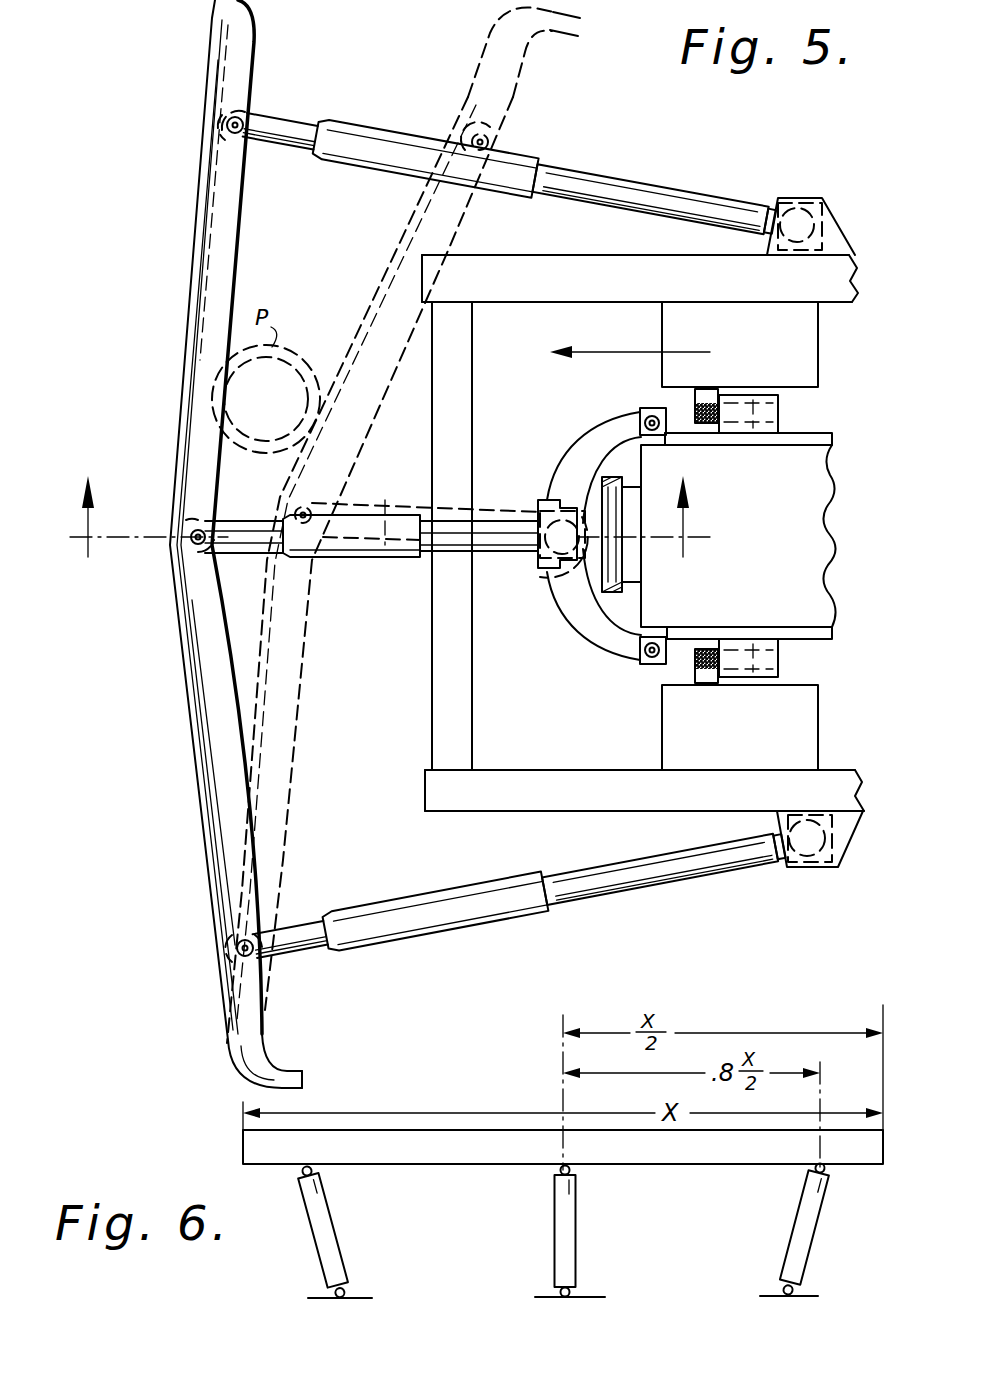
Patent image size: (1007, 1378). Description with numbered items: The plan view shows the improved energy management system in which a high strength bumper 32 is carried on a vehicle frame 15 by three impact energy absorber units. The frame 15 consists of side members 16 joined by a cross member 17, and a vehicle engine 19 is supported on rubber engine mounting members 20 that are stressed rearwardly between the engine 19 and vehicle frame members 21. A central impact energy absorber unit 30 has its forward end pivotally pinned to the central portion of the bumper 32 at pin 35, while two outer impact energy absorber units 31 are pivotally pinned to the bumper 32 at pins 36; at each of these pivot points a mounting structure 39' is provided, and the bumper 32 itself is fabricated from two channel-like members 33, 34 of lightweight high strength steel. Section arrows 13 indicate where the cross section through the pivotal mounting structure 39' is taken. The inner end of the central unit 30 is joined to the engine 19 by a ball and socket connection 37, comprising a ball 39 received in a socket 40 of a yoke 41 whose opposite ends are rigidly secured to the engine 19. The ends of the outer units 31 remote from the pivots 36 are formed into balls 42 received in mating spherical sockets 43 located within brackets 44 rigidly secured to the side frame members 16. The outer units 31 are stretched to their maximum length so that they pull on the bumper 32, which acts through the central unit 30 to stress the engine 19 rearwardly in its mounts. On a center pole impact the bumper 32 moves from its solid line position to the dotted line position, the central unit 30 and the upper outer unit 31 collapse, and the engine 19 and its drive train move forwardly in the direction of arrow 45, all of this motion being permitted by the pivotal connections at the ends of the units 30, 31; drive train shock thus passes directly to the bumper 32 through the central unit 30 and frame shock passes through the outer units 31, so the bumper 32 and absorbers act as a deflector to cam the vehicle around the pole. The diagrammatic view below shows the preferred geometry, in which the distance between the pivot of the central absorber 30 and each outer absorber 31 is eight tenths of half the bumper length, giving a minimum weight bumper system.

In FIG. 5, the axis of rotation / direction arrow 13 is at (375, 521).
In FIG. 5, the vehicle frame 15 is at (433, 721).
In FIG. 5, the side member 16 is at (586, 266).
In FIG. 5, the cross member 17 is at (464, 740).
In FIG. 5, the vehicle engine 19 is at (830, 492).
In FIG. 5, the rubber engine mounting member 20 is at (708, 402).
In FIG. 5, the vehicle frame member 21 is at (742, 396).
In FIG. 5, the central impact energy absorber unit 30 is at (366, 524).
In FIG. 5, the outer impact energy absorber unit 31 is at (617, 190).
In FIG. 6, the outer impact energy absorber unit 31 is at (334, 1252).
In FIG. 5, the bumper 32 is at (194, 272).
In FIG. 6, the bumper 32 is at (462, 1160).
In FIG. 5, the channel-like member 33 is at (193, 215).
In FIG. 5, the channel-like member 34 is at (223, 258).
In FIG. 5, the pivot pin 35 is at (202, 548).
In FIG. 5, the pivot pin 36 is at (226, 125).
In FIG. 5, the ball and socket connection 37 is at (545, 588).
In FIG. 5, the ball 39 is at (541, 517).
In FIG. 5, the pivotal mounting structure 39' is at (193, 536).
In FIG. 5, the socket 40 is at (558, 612).
In FIG. 5, the yoke 41 is at (588, 437).
In FIG. 5, the ball 42 is at (802, 212).
In FIG. 5, the spherical socket 43 is at (830, 205).
In FIG. 5, the bracket 44 is at (838, 230).
In FIG. 5, the arrow 45 is at (633, 349).